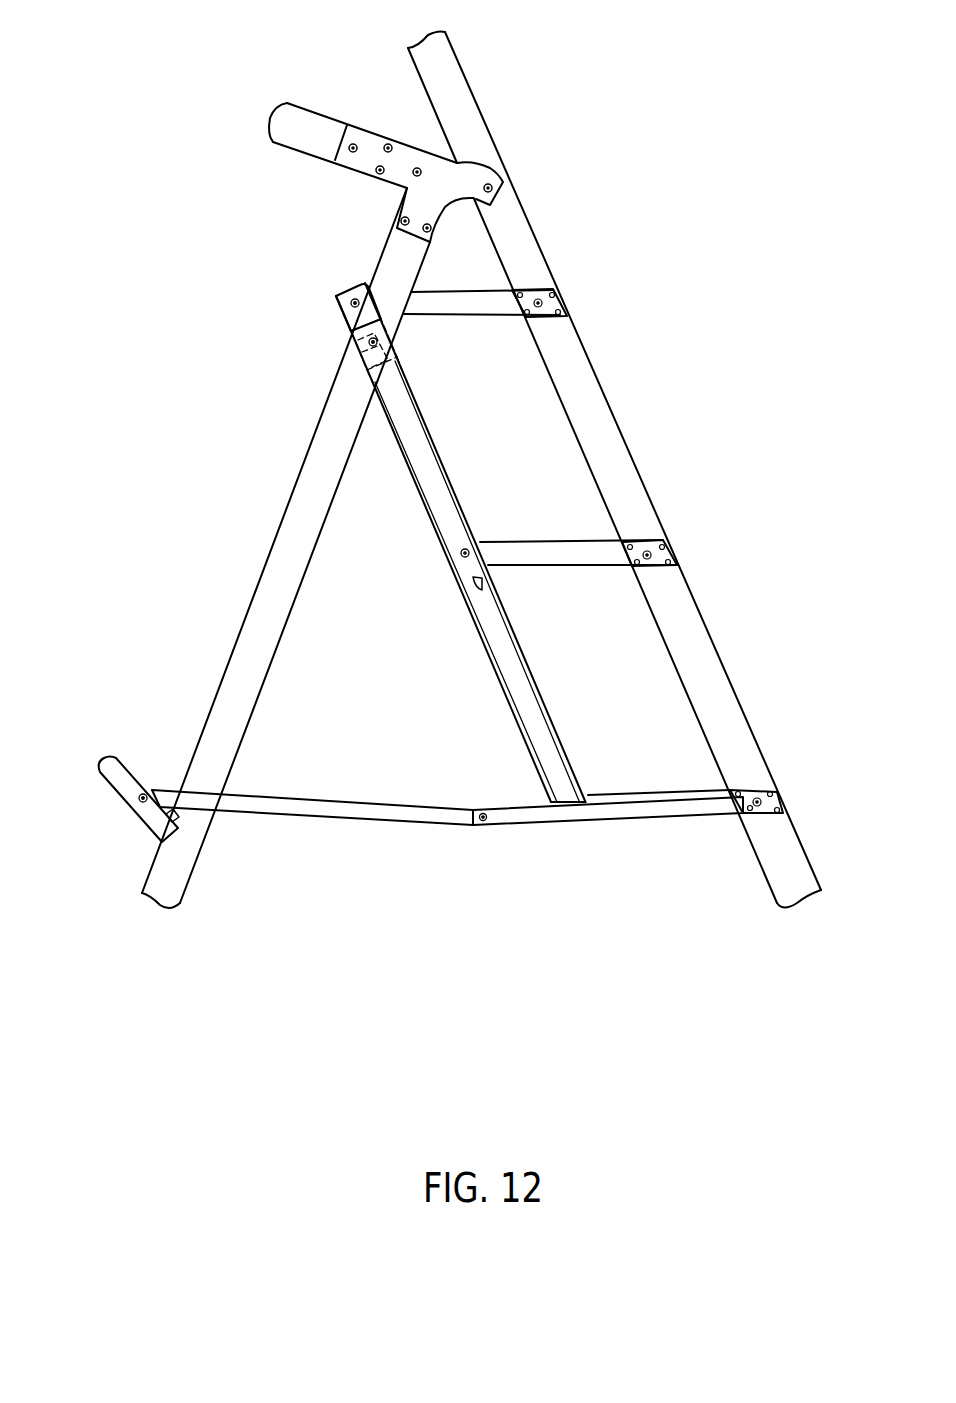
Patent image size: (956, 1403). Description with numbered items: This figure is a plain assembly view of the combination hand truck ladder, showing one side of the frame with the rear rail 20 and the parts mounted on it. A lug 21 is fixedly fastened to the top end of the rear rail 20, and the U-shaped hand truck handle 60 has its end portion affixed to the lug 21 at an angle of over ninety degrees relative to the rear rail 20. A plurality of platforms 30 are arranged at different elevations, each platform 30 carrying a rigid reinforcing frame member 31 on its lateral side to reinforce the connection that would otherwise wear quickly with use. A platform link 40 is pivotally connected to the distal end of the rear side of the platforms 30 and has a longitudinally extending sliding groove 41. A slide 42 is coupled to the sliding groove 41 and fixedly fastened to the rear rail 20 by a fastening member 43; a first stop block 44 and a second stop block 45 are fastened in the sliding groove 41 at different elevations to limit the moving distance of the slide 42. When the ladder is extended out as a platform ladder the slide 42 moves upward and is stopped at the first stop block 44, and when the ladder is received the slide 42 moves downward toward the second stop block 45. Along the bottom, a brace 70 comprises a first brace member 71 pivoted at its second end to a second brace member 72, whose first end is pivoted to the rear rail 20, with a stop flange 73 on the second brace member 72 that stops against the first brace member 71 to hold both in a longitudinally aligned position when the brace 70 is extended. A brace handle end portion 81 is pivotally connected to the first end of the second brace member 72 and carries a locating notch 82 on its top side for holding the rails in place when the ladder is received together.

The rear rail 20 is at (283, 535).
The lug 21 is at (357, 163).
The platform 30 is at (487, 288).
The rigid reinforcing frame member 31 is at (453, 298).
The platform link 40 is at (430, 510).
The sliding groove 41 is at (422, 455).
The slide 42 is at (408, 368).
The fastening member 43 is at (370, 342).
The first stop block 44 is at (342, 307).
The second stop block 45 is at (472, 582).
The hand truck handle 60 is at (285, 127).
The brace 70 is at (423, 795).
The first brace member 71 is at (607, 815).
The second brace member 72 is at (307, 807).
The stop flange 73 is at (367, 802).
The end portion 81 is at (118, 768).
The locating notch 82 is at (175, 820).